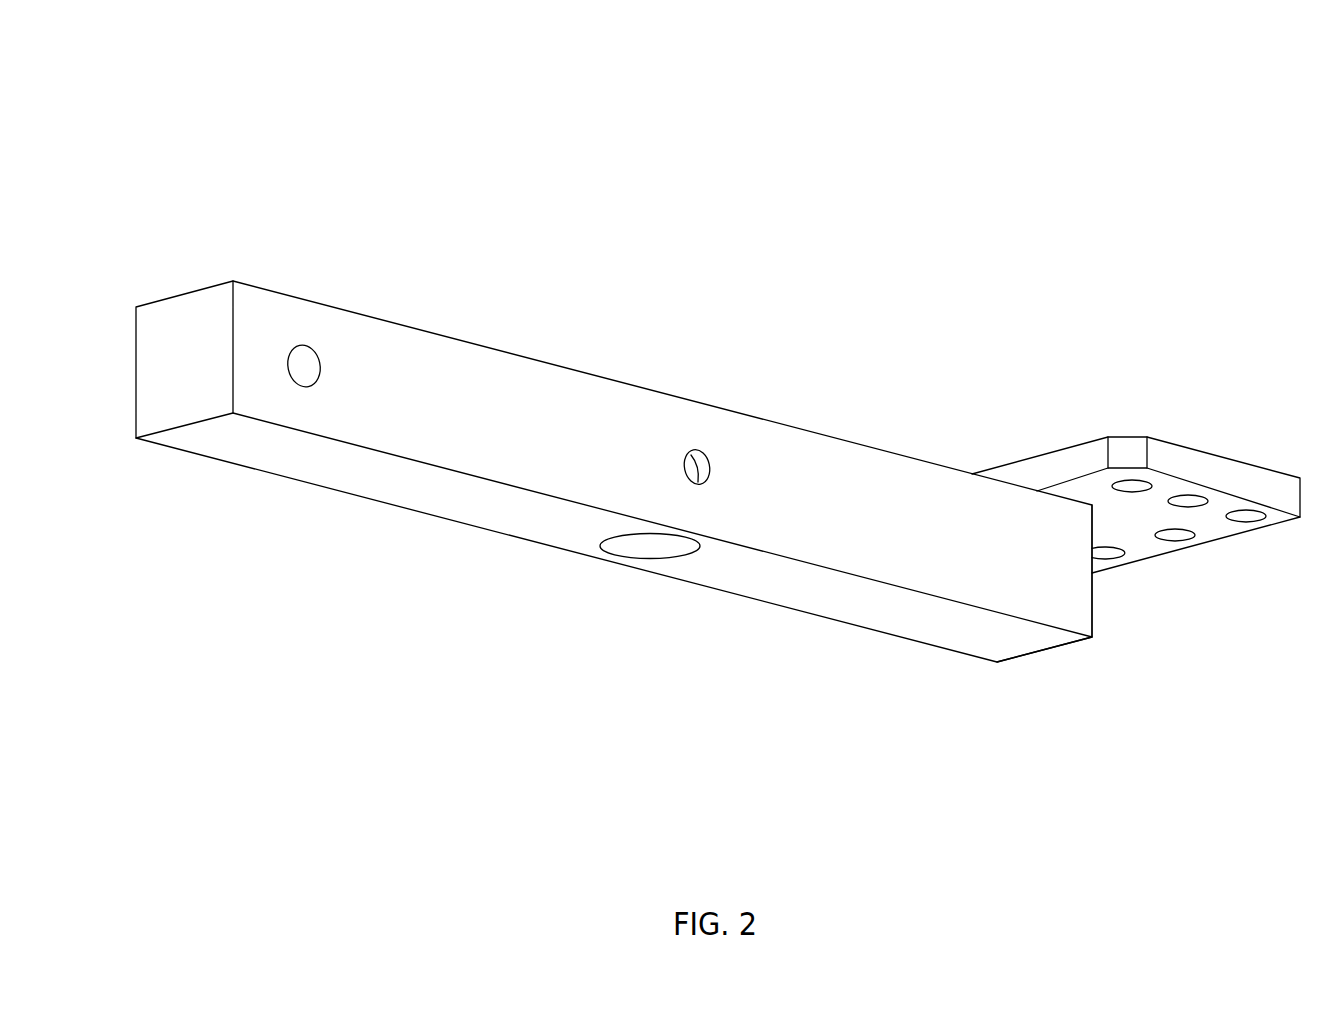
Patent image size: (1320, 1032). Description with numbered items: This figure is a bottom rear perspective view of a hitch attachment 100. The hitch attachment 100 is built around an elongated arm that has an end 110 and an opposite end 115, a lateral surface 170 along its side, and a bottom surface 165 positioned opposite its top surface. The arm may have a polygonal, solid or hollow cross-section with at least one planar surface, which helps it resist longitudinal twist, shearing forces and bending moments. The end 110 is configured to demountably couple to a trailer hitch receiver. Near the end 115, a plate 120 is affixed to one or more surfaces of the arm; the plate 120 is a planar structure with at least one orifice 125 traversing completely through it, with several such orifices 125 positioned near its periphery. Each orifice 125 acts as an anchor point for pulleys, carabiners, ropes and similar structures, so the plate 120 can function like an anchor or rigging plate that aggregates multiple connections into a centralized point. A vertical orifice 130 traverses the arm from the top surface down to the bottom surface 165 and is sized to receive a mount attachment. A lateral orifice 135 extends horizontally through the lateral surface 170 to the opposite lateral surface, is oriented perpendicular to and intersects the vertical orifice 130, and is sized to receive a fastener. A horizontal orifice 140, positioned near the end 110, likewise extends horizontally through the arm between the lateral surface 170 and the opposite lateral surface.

The hitch attachment 100 is at (1181, 141).
The end 110 is at (192, 330).
The end 115 is at (1092, 592).
The plate 120 is at (1230, 458).
The orifice 125 is at (1245, 517).
The vertical orifice 130 is at (646, 548).
The lateral orifice 135 is at (697, 460).
The horizontal orifice 140 is at (303, 360).
The bottom surface 165 is at (940, 615).
The lateral surface 170 is at (472, 385).